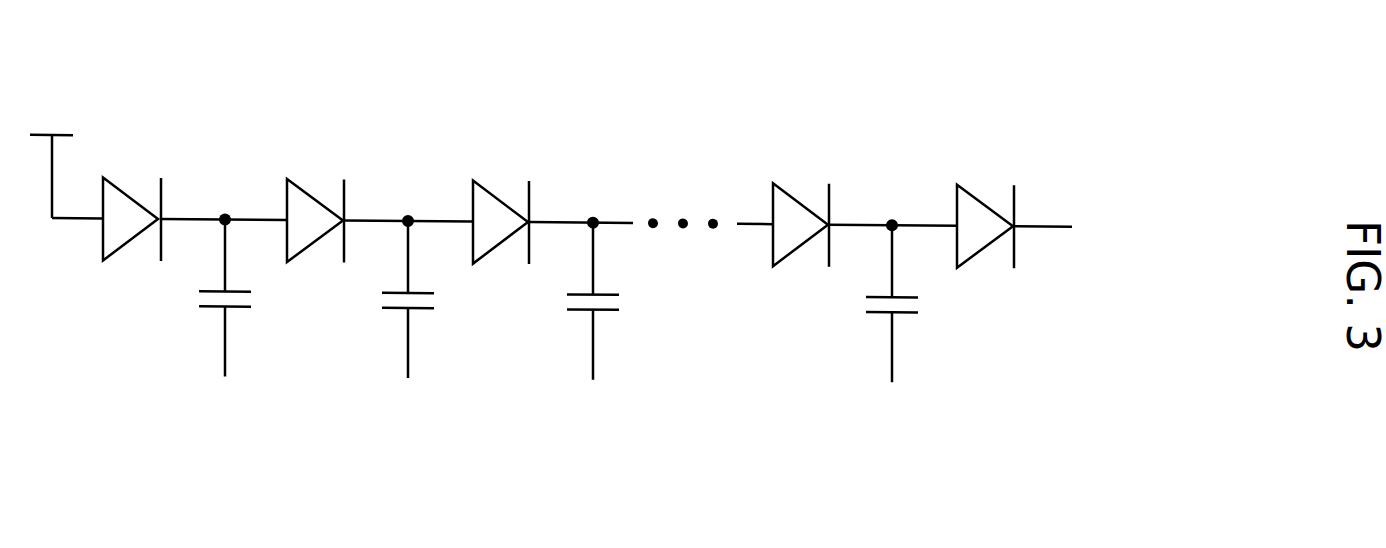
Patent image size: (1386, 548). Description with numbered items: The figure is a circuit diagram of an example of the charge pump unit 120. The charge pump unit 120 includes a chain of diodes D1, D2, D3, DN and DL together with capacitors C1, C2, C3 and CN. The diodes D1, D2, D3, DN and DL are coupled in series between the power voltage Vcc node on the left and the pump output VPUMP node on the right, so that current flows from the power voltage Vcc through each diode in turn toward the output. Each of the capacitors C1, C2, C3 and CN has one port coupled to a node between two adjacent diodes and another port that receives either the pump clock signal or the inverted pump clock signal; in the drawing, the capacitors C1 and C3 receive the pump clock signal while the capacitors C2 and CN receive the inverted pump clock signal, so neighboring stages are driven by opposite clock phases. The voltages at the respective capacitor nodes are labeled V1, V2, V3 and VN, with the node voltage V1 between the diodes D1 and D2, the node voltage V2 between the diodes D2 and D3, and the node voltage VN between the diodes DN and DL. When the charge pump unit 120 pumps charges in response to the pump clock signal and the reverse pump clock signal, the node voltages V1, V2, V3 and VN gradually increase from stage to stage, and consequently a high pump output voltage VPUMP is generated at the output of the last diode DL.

The charge pump unit 120 is at (601, 234).
The diode D1 is at (132, 200).
The diode D2 is at (315, 201).
The diode D3 is at (501, 203).
The diode DN is at (801, 206).
The diode DL is at (985, 208).
The capacitor C1 is at (215, 336).
The capacitor C2 is at (399, 338).
The capacitor C3 is at (583, 339).
The capacitor CN is at (885, 342).
The voltage of capacitor node V1 is at (222, 200).
The voltage of capacitor node V2 is at (408, 201).
The voltage of capacitor node V3 is at (591, 203).
The voltage of capacitor node VN is at (893, 205).
The power voltage Vcc is at (51, 159).
The pump output voltage VPUMP is at (1093, 220).